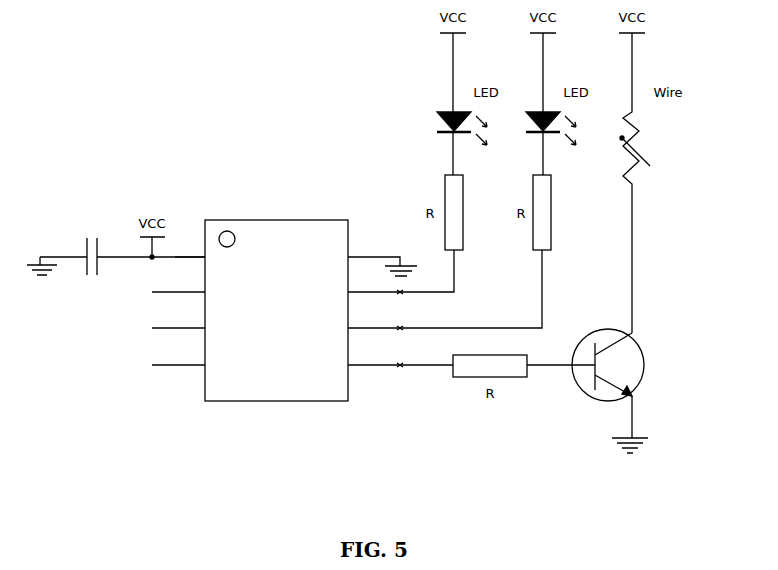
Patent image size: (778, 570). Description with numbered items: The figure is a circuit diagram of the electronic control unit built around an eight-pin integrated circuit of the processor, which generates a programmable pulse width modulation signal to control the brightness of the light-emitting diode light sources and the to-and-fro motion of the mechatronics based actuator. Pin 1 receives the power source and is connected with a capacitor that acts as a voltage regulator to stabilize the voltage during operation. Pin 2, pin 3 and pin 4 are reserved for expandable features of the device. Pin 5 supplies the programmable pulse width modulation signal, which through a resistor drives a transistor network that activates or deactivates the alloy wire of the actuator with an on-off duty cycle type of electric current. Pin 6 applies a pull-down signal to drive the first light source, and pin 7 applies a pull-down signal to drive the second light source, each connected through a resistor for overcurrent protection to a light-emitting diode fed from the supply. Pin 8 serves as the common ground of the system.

The pin 1 is at (190, 246).
The pin 2 is at (178, 282).
The pin 3 is at (178, 318).
The pin 4 is at (178, 355).
The pin 5 is at (400, 356).
The pin 6 is at (445, 290).
The pin 7 is at (401, 272).
The pin 8 is at (382, 256).